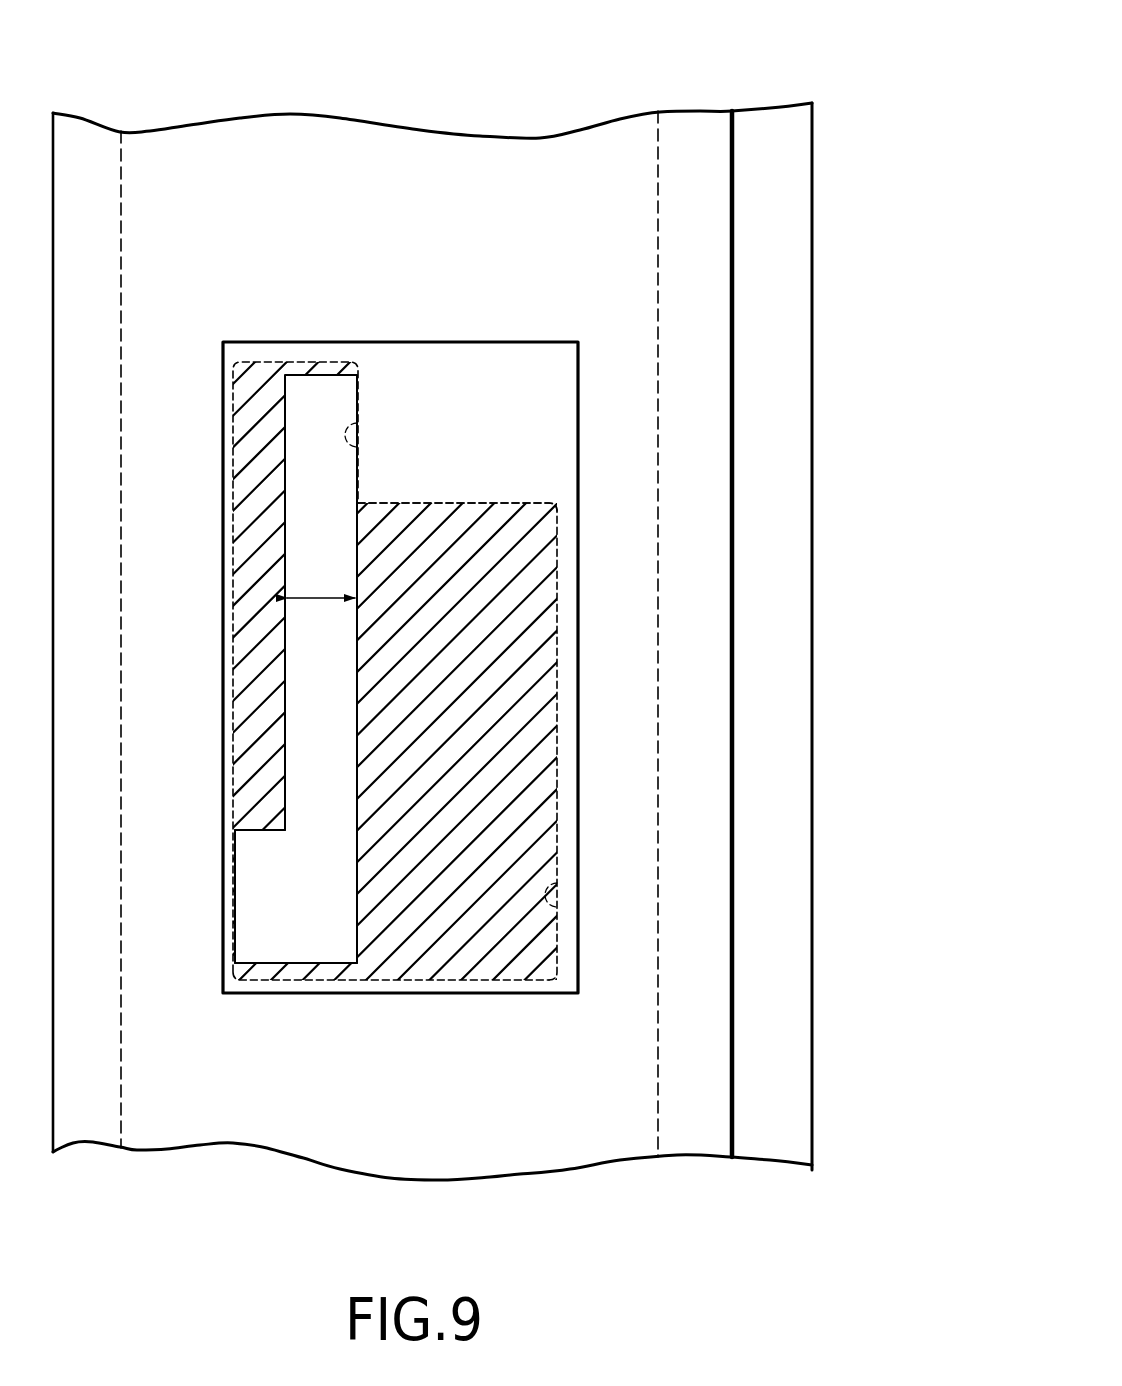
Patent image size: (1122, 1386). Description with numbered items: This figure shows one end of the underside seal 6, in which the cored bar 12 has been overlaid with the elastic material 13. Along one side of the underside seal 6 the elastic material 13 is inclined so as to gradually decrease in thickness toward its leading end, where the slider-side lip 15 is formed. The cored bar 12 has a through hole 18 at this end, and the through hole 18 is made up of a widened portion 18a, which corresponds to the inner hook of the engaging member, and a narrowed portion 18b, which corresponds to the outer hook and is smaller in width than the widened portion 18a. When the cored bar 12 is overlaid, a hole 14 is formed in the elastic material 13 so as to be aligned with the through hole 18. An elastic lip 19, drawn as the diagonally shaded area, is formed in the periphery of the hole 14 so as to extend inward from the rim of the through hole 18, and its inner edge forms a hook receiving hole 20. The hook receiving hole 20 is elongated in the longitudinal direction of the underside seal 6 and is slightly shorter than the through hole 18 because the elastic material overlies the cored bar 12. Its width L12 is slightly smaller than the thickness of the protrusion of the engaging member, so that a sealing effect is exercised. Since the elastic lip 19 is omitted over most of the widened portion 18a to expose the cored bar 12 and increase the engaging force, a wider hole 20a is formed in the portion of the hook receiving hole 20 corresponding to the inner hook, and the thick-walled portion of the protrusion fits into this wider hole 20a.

The underside seal 6 is at (860, 65).
The cored bar 12 is at (593, 153).
The elastic material 13 is at (682, 140).
The slider-side lip 15 is at (765, 128).
The hole 14 is at (449, 342).
The elastic lip 19 is at (250, 487).
The through hole 18 is at (467, 503).
The widened portion 18a is at (558, 883).
The narrowed portion 18b is at (360, 424).
The hook receiving hole 20 is at (285, 428).
The wider hole 20a is at (258, 913).
The width of the hook receiving hole L12 is at (322, 594).